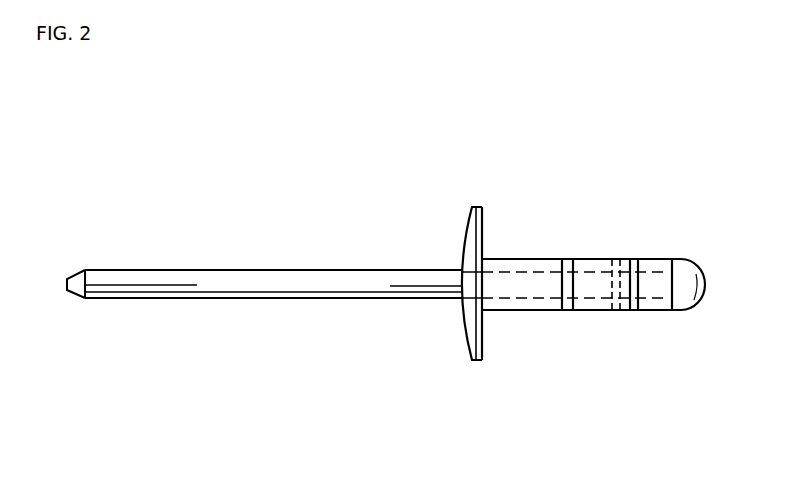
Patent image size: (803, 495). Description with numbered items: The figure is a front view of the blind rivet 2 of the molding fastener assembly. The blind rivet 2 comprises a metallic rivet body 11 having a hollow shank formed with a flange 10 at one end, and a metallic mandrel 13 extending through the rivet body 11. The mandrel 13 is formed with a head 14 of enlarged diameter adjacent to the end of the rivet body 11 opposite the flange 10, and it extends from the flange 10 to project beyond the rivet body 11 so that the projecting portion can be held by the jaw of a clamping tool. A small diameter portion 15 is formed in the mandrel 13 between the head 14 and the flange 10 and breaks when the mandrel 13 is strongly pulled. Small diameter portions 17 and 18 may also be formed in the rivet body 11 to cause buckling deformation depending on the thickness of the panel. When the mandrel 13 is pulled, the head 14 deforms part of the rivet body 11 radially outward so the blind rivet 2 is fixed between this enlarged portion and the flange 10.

The blind rivet 2 is at (359, 217).
The flange 10 is at (470, 360).
The rivet body 11 is at (530, 310).
The mandrel 13 is at (337, 297).
The head 14 is at (690, 311).
The small diameter portion 15 is at (615, 262).
The small diameter portion 17 is at (567, 262).
The small diameter portion 18 is at (633, 262).